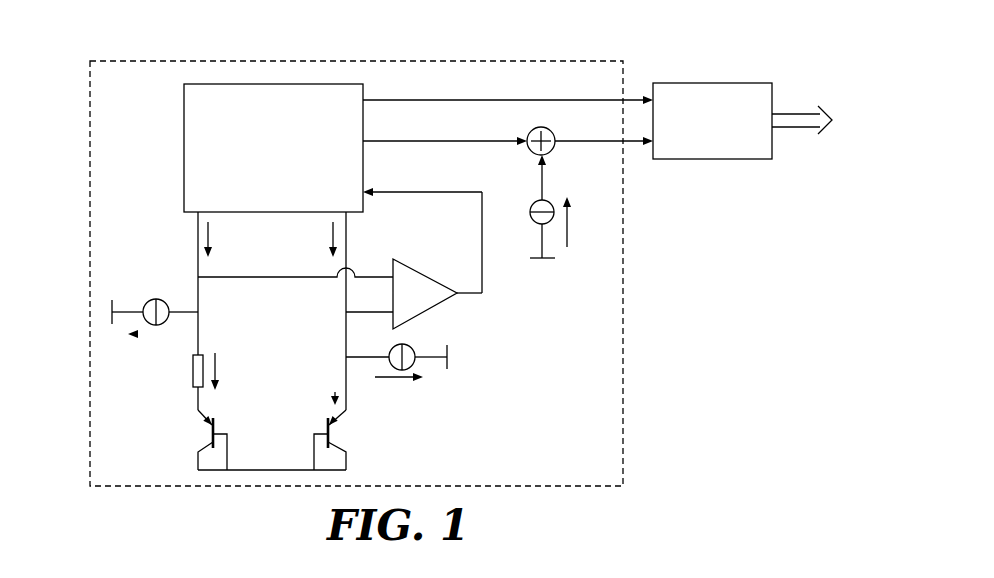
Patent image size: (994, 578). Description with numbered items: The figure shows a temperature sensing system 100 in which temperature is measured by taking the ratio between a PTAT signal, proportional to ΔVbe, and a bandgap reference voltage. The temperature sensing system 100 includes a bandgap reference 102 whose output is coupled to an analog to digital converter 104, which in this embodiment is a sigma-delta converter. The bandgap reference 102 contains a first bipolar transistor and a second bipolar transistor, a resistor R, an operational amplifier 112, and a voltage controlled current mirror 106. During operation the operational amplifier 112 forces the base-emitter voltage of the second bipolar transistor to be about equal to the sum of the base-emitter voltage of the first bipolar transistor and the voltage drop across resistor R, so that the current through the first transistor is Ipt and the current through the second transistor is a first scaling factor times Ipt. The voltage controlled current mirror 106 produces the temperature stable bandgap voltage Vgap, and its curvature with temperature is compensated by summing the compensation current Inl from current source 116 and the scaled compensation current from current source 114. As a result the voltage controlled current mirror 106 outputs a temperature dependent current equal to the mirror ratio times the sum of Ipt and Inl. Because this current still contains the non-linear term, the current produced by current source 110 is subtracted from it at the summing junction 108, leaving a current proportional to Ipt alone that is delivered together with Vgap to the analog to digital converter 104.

The temperature sensing system 100 is at (84, 32).
The bandgap reference 102 is at (535, 61).
The analog to digital converter 104 is at (672, 83).
The voltage controlled current mirror 106 is at (363, 90).
The summing junction 108 is at (551, 131).
The current source 110 is at (533, 222).
The operational amplifier 112 is at (417, 272).
The current source 114 is at (412, 347).
The current source 116 is at (150, 300).